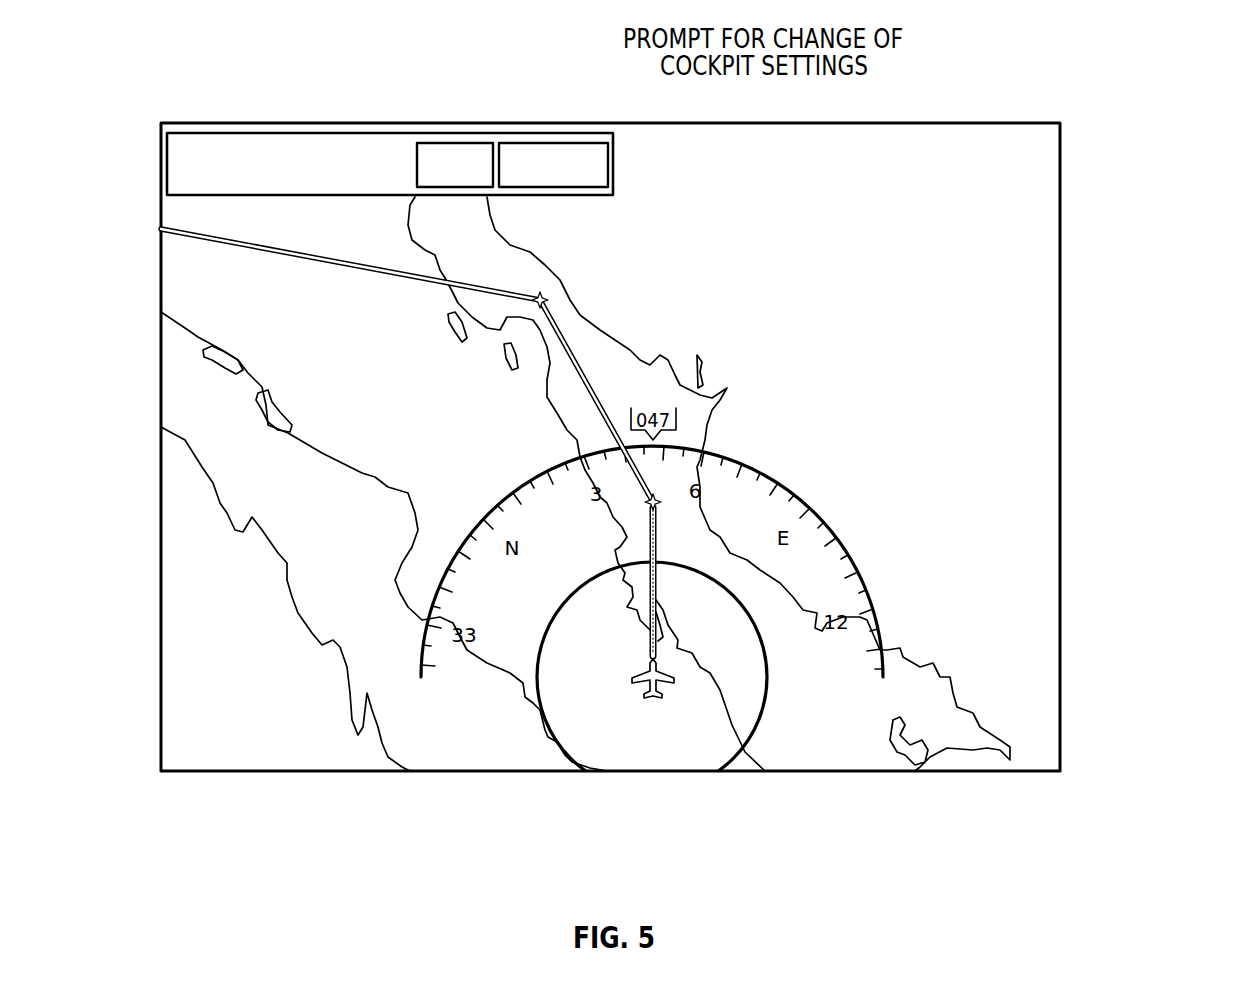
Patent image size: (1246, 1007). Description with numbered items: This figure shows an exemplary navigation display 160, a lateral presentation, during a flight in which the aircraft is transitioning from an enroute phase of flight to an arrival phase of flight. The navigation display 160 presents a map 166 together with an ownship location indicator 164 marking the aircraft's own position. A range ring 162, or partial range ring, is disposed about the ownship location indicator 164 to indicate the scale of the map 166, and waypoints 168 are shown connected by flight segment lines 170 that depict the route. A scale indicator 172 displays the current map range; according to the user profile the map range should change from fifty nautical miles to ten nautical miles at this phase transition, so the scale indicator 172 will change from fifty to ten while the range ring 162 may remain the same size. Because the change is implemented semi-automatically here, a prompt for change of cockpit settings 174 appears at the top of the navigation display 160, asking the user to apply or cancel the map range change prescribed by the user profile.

The navigation display 160 is at (889, 806).
The range ring 162 is at (548, 737).
The ownship location indicator 164 is at (663, 685).
The map 166 is at (296, 695).
The waypoints 168 is at (657, 494).
The flight segment lines 170 is at (580, 360).
The scale indicator 172 is at (527, 672).
The prompt for change of cockpit settings 174 is at (706, 114).